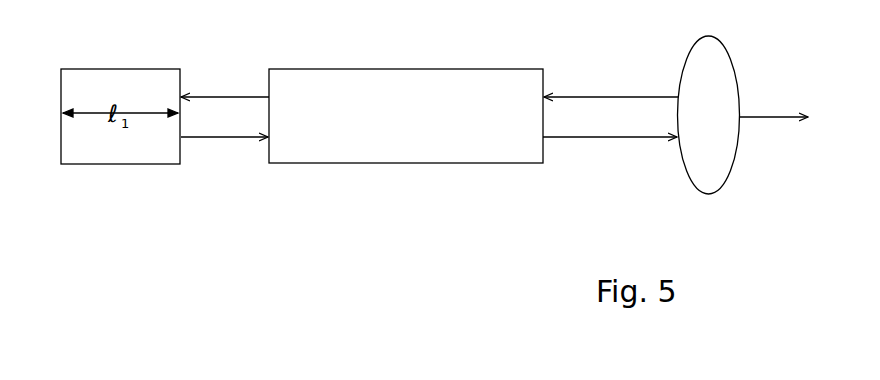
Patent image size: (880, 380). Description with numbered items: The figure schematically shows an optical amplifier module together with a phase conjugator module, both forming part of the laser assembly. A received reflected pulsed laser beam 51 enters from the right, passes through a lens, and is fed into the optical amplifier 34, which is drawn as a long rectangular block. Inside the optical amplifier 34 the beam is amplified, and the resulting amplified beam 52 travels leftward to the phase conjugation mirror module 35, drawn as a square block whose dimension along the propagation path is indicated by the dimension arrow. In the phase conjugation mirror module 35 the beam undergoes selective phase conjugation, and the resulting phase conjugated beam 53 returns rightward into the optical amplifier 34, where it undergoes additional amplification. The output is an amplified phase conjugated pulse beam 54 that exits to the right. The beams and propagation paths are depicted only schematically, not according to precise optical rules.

The optical amplifier 34 is at (393, 69).
The phase conjugation mirror module 35 is at (108, 69).
The received reflected pulsed laser beam 51 is at (600, 97).
The amplified beam 52 is at (224, 97).
The phase conjugated beam 53 is at (222, 137).
The amplified phase conjugated pulse beam 54 is at (770, 117).